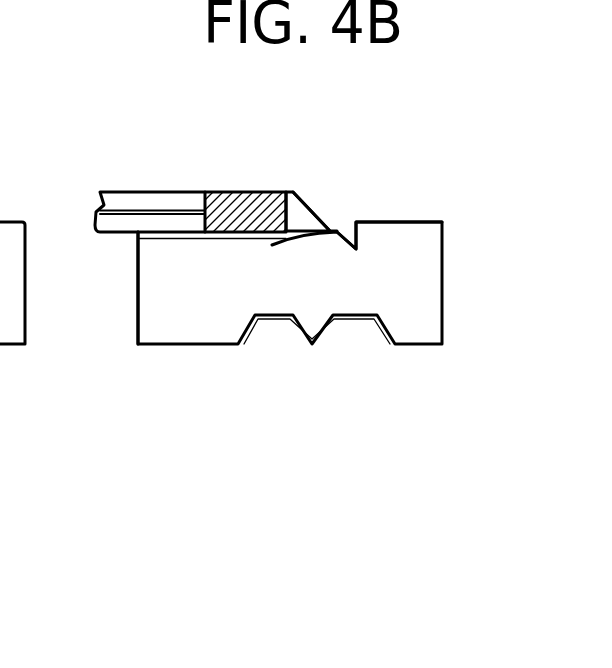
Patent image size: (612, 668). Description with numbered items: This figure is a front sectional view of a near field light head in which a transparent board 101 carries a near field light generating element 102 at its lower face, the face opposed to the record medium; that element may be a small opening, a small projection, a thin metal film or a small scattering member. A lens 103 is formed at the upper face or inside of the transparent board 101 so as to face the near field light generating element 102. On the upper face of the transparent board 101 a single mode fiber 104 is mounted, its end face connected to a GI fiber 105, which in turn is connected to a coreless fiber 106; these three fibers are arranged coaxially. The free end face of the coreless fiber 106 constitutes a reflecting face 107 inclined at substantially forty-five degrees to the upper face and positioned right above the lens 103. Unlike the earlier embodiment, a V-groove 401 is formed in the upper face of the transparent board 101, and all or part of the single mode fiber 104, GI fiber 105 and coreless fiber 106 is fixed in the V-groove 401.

The transparent board 101 is at (220, 323).
The near field light generating element 102 is at (313, 343).
The lens 103 is at (320, 241).
The single mode fiber 104 is at (157, 207).
The GI fiber 105 is at (248, 213).
The coreless fiber 106 is at (301, 222).
The reflecting face 107 is at (330, 228).
The V-groove 401 is at (163, 237).